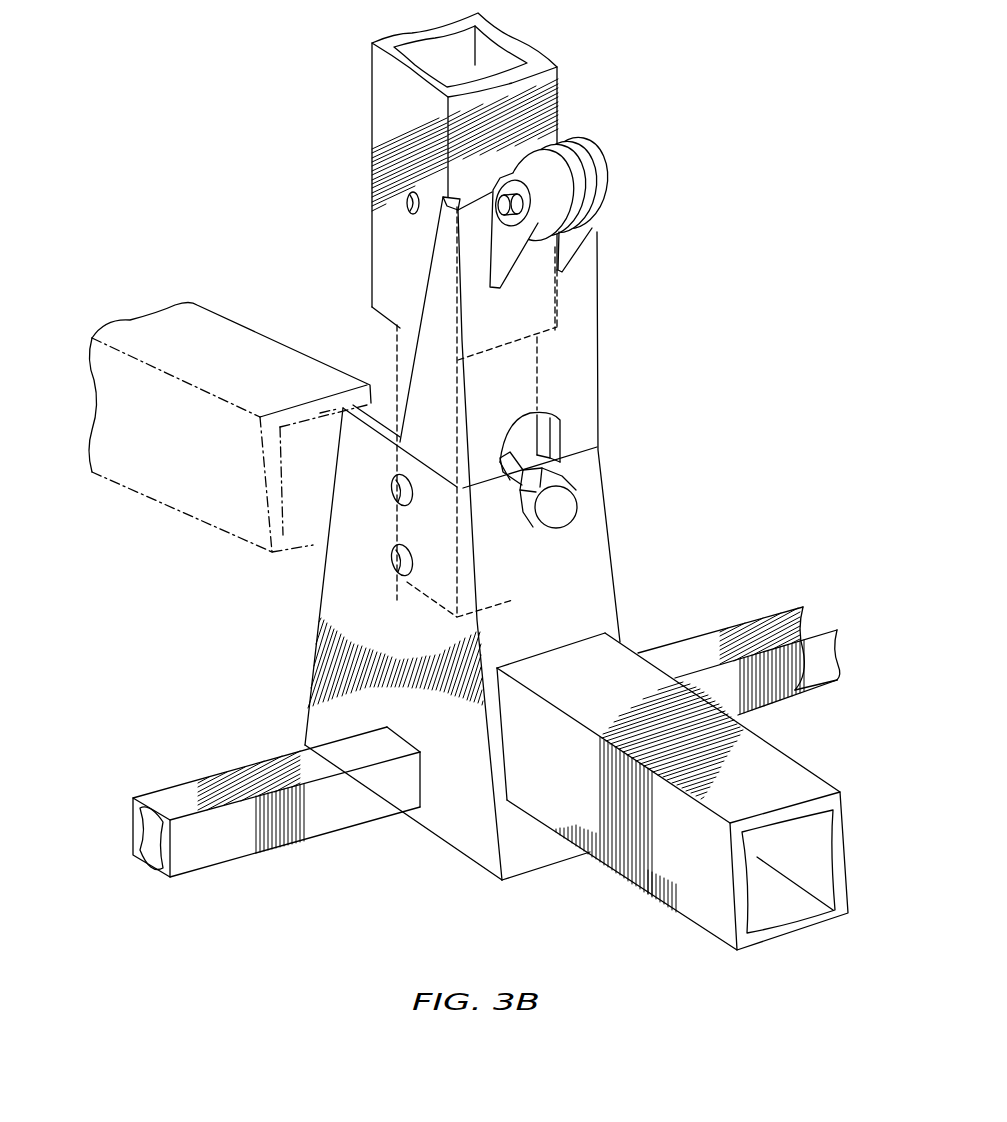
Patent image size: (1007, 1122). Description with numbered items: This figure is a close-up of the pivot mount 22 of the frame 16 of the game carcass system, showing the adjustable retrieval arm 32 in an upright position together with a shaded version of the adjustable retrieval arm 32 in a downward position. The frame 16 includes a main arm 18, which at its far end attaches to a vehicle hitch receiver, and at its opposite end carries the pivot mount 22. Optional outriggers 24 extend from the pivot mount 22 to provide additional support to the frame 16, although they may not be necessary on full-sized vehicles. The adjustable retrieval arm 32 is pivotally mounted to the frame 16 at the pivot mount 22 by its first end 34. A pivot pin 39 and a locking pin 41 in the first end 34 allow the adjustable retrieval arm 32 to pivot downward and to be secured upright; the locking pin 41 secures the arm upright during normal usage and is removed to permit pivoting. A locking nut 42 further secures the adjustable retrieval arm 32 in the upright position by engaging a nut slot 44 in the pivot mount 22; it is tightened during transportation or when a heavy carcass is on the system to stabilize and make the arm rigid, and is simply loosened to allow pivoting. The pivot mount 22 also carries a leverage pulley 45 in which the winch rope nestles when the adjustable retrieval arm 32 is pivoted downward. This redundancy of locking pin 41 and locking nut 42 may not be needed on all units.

The frame 16 is at (740, 562).
The main arm 18 is at (690, 907).
The pivot mount 22 is at (453, 833).
The outriggers 24 is at (168, 797).
The adjustable retrieval arm 32 is at (384, 112).
The first end 34 is at (403, 357).
The pivot pin 39 is at (400, 566).
The locking pin 41 is at (400, 496).
The locking nut 42 is at (556, 525).
The nut slot 44 is at (520, 445).
The leverage pulley 45 is at (570, 143).